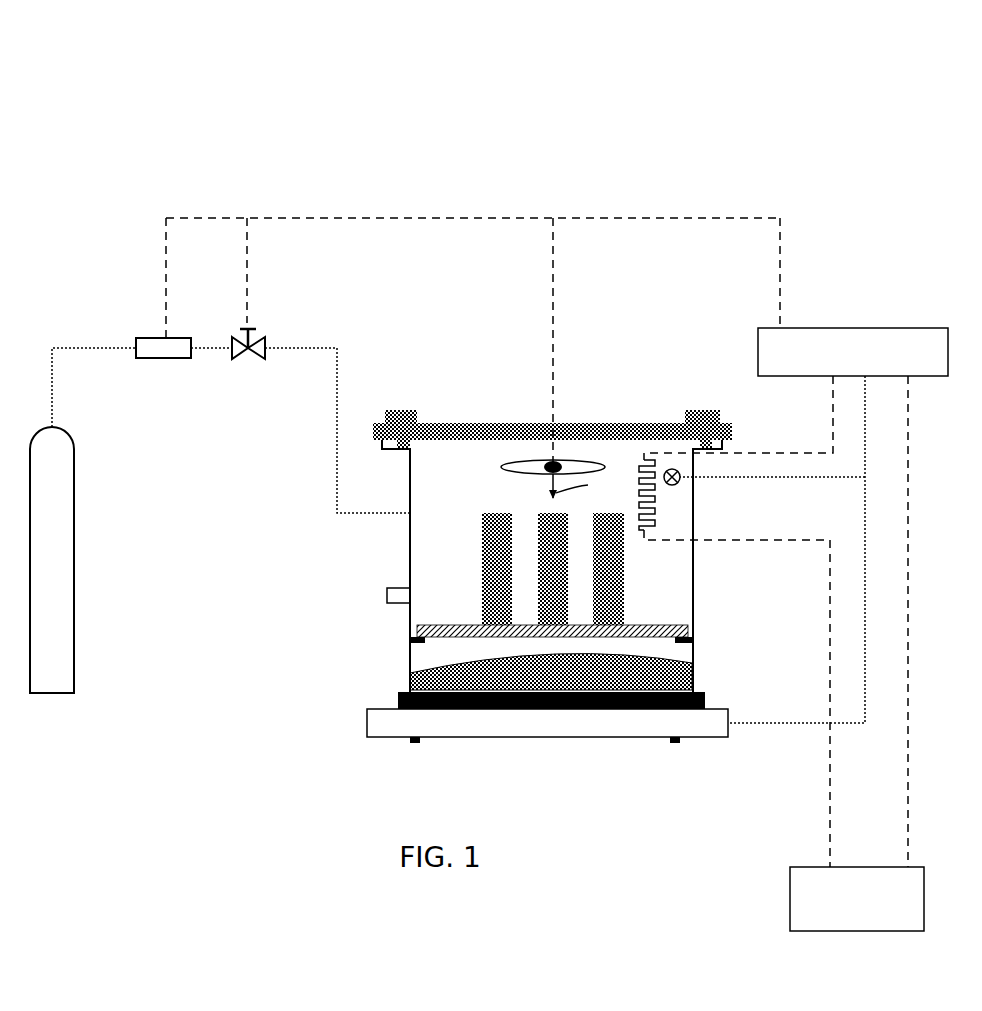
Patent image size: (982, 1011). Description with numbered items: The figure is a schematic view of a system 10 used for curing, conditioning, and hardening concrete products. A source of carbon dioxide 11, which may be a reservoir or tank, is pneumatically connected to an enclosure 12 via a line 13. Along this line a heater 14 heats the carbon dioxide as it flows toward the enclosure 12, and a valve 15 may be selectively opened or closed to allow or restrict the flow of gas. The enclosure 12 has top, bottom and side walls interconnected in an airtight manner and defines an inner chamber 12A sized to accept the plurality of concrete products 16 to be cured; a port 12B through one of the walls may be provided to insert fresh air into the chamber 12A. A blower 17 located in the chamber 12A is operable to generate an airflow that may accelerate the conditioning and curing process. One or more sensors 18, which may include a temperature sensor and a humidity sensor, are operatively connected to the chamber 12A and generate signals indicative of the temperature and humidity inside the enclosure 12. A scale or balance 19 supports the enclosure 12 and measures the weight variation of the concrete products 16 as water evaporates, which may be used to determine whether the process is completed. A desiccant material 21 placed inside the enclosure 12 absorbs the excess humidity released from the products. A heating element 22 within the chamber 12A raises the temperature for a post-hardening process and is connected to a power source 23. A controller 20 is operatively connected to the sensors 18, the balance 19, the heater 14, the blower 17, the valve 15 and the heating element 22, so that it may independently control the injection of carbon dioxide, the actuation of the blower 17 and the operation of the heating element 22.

The system 10 is at (580, 158).
The source of carbon dioxide 11 is at (74, 493).
The enclosure 12 is at (470, 431).
The chamber 12A is at (502, 508).
The port 12B is at (395, 605).
The line 13 is at (340, 382).
The heater 14 is at (152, 352).
The valve 15 is at (263, 337).
The concrete products 16 is at (515, 590).
The blower 17 is at (582, 460).
The sensors 18 is at (684, 489).
The balance 19 is at (560, 738).
The controller 20 is at (866, 328).
The desiccant material 21 is at (410, 673).
The heating element 22 is at (636, 485).
The power source 23 is at (857, 931).